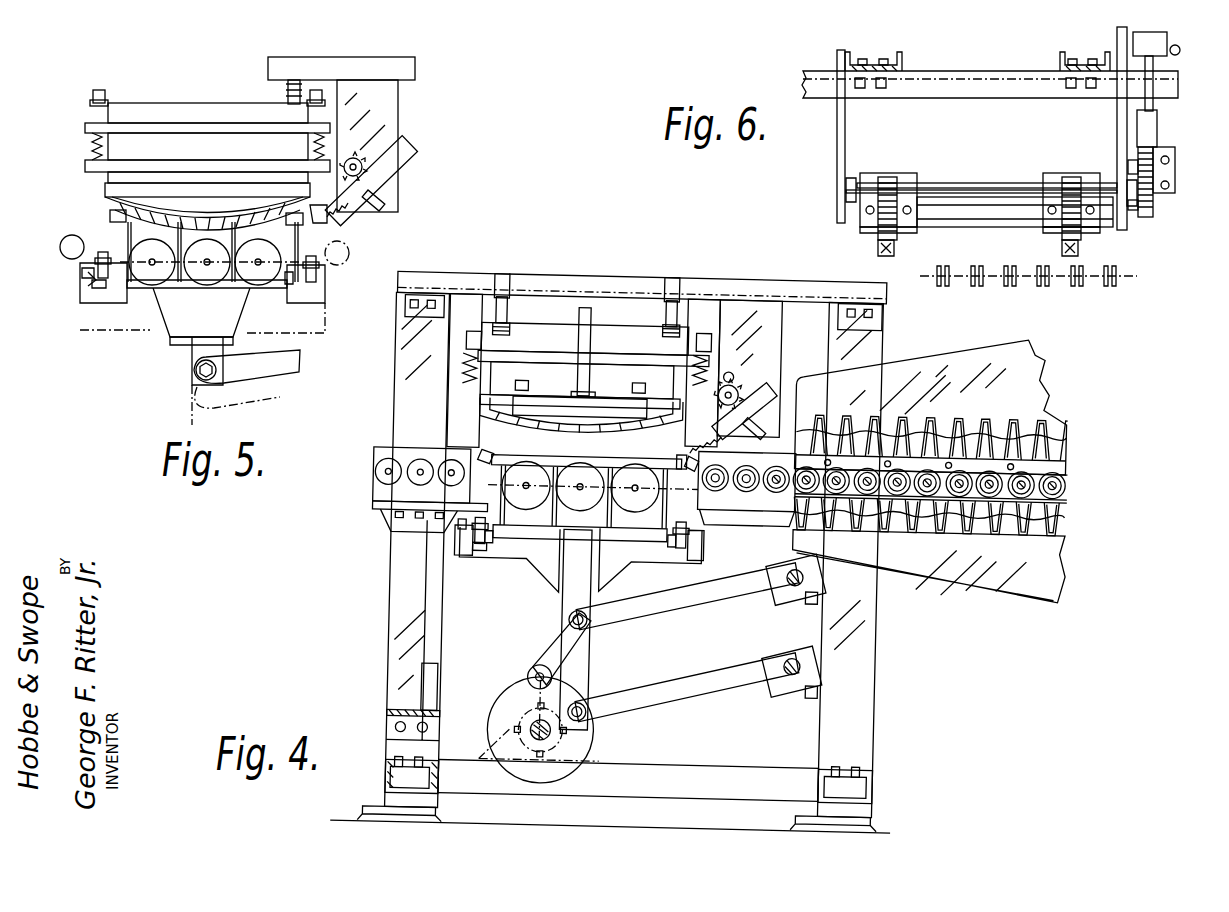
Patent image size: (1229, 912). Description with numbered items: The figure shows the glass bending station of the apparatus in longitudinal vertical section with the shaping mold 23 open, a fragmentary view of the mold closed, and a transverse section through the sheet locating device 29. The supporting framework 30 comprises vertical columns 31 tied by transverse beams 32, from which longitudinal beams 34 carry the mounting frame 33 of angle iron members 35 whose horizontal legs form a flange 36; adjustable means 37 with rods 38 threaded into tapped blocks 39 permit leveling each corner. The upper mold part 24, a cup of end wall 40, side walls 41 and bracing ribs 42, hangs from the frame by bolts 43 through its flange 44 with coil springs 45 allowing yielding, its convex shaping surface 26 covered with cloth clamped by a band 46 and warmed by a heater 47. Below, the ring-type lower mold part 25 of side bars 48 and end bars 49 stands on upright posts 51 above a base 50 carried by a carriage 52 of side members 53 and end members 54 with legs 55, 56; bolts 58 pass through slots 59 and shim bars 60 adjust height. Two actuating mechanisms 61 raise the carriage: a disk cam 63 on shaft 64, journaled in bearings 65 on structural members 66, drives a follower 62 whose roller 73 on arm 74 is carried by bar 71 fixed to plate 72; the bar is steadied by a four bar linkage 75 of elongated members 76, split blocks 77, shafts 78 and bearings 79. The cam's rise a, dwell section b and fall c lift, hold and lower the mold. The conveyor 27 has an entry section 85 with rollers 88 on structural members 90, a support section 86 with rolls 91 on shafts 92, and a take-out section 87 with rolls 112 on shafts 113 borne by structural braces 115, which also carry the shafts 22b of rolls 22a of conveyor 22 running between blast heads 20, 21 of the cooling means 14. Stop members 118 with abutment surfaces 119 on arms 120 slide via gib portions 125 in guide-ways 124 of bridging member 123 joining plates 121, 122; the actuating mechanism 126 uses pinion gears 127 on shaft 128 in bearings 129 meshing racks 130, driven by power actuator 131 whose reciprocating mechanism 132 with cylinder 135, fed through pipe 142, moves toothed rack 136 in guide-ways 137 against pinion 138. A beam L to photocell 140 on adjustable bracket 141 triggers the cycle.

In FIG. 4, the cooling means 14 is at (960, 347).
In FIG. 4, the blast head 20 is at (1035, 409).
In FIG. 4, the blast head 21 is at (990, 578).
In FIG. 4, the conveyor 22 is at (983, 462).
In FIG. 4, the rolls 22a is at (1042, 474).
In FIG. 4, the shafts 22b is at (1056, 489).
In FIG. 5, the shaping mold 23 is at (151, 171).
In FIG. 5, the upper mold part 24 is at (94, 194).
In FIG. 4, the upper mold part 24 is at (508, 405).
In FIG. 5, the lower mold part 25 is at (100, 217).
In FIG. 4, the lower mold part 25 is at (507, 467).
In FIG. 4, the shaping surfaces 26 is at (485, 462).
In FIG. 4, the conveyor 27 is at (567, 450).
In FIG. 5, the locating device 29 is at (391, 137).
In FIG. 4, the locating device 29 is at (666, 417).
In FIG. 6, the locating device 29 is at (977, 169).
In FIG. 4, the supporting framework 30 is at (484, 270).
In FIG. 4, the vertical columns 31 is at (390, 626).
In FIG. 4, the beams 32 is at (438, 291).
In FIG. 6, the beams 32 is at (950, 78).
In FIG. 5, the mounting frame 33 is at (198, 114).
In FIG. 4, the mounting frame 33 is at (602, 336).
In FIG. 5, the beams 34 is at (327, 70).
In FIG. 6, the beams 34 is at (902, 60).
In FIG. 5, the angle iron members 35 is at (225, 122).
In FIG. 4, the angle iron members 35 is at (635, 348).
In FIG. 5, the flange 36 is at (85, 127).
In FIG. 4, the flange 36 is at (470, 352).
In FIG. 4, the adjustable means 37 is at (510, 313).
In FIG. 5, the rods 38 is at (300, 103).
In FIG. 4, the rods 38 is at (508, 325).
In FIG. 4, the tapped blocks 39 is at (506, 300).
In FIG. 4, the end wall 40 is at (522, 440).
In FIG. 4, the side walls 41 is at (652, 380).
In FIG. 4, the bracing ribs 42 is at (546, 392).
In FIG. 5, the bolts 43 is at (93, 108).
In FIG. 4, the bolts 43 is at (728, 320).
In FIG. 5, the flange 44 is at (85, 166).
In FIG. 4, the flange 44 is at (480, 404).
In FIG. 5, the coil springs 45 is at (90, 150).
In FIG. 4, the coil springs 45 is at (460, 367).
In FIG. 4, the band 46 is at (487, 428).
In FIG. 4, the heater 47 is at (592, 395).
In FIG. 5, the side bars 48 is at (110, 216).
In FIG. 4, the side bars 48 is at (480, 470).
In FIG. 5, the end bars 49 is at (162, 222).
In FIG. 4, the end bars 49 is at (612, 478).
In FIG. 5, the base 50 is at (125, 300).
In FIG. 4, the base 50 is at (530, 540).
In FIG. 5, the upright posts 51 is at (160, 280).
In FIG. 4, the upright posts 51 is at (643, 530).
In FIG. 5, the carriage 52 is at (108, 336).
In FIG. 4, the carriage 52 is at (488, 586).
In FIG. 5, the side members 53 is at (83, 283).
In FIG. 4, the side members 53 is at (457, 543).
In FIG. 5, the end members 54 is at (100, 295).
In FIG. 4, the end members 54 is at (525, 572).
In FIG. 5, the leg 55 is at (92, 285).
In FIG. 4, the leg 55 is at (473, 550).
In FIG. 5, the leg 56 is at (82, 271).
In FIG. 4, the leg 56 is at (458, 528).
In FIG. 5, the bolts 58 is at (103, 254).
In FIG. 4, the bolts 58 is at (478, 556).
In FIG. 5, the slots 59 is at (86, 277).
In FIG. 5, the shim bars 60 is at (292, 290).
In FIG. 4, the shim bars 60 is at (486, 556).
In FIG. 4, the actuating mechanisms 61 is at (514, 639).
In FIG. 4, the follower 62 is at (513, 671).
In FIG. 4, the disk cam 63 is at (505, 712).
In FIG. 4, the shaft 64 is at (546, 733).
In FIG. 4, the bearings 65 is at (592, 768).
In FIG. 4, the structural members 66 is at (700, 782).
In FIG. 5, the bar 71 is at (198, 348).
In FIG. 4, the bar 71 is at (567, 637).
In FIG. 5, the plate 72 is at (170, 325).
In FIG. 4, the plate 72 is at (560, 594).
In FIG. 4, the roller 73 is at (528, 680).
In FIG. 4, the arm 74 is at (548, 667).
In FIG. 4, the four bar linkage 75 is at (625, 632).
In FIG. 5, the elongated members 76 is at (270, 365).
In FIG. 4, the elongated members 76 is at (688, 602).
In FIG. 4, the split blocks 77 is at (788, 585).
In FIG. 4, the shafts 78 is at (790, 598).
In FIG. 4, the bearings 79 is at (818, 600).
In FIG. 4, the entry section 85 is at (420, 450).
In FIG. 5, the support section 86 is at (260, 295).
In FIG. 4, the support section 86 is at (601, 452).
In FIG. 4, the take-out section 87 is at (778, 457).
In FIG. 5, the rollers 88 is at (60, 248).
In FIG. 4, the rollers 88 is at (408, 470).
In FIG. 4, the structural members 90 is at (380, 511).
In FIG. 5, the rolls 91 is at (242, 275).
In FIG. 4, the rolls 91 is at (618, 505).
In FIG. 5, the shafts 92 is at (207, 285).
In FIG. 4, the shafts 92 is at (582, 520).
In FIG. 5, the rolls 112 is at (340, 266).
In FIG. 4, the rolls 112 is at (715, 488).
In FIG. 6, the rolls 112 is at (1028, 288).
In FIG. 4, the shafts 113 is at (748, 488).
In FIG. 4, the structural braces 115 is at (712, 552).
In FIG. 5, the stop members 118 is at (330, 230).
In FIG. 6, the stop members 118 is at (894, 249).
In FIG. 5, the abutment surfaces 119 is at (311, 211).
In FIG. 4, the abutment surfaces 119 is at (678, 462).
In FIG. 6, the abutment surfaces 119 is at (882, 253).
In FIG. 5, the arms 120 is at (345, 216).
In FIG. 4, the arms 120 is at (716, 458).
In FIG. 6, the arms 120 is at (878, 246).
In FIG. 5, the plate 121 is at (378, 107).
In FIG. 4, the plate 121 is at (750, 310).
In FIG. 6, the plate 121 is at (845, 113).
In FIG. 6, the plate 122 is at (1117, 112).
In FIG. 5, the bridging member 123 is at (392, 196).
In FIG. 4, the bridging member 123 is at (772, 424).
In FIG. 6, the bridging member 123 is at (975, 212).
In FIG. 5, the guide-ways 124 is at (398, 178).
In FIG. 4, the guide-ways 124 is at (780, 402).
In FIG. 6, the guide-ways 124 is at (870, 174).
In FIG. 6, the gib portions 125 is at (862, 229).
In FIG. 4, the actuating mechanism 126 is at (748, 376).
In FIG. 6, the actuating mechanism 126 is at (940, 176).
In FIG. 5, the pinion gears 127 is at (362, 166).
In FIG. 4, the pinion gears 127 is at (745, 397).
In FIG. 6, the pinion gears 127 is at (898, 186).
In FIG. 4, the shaft 128 is at (752, 410).
In FIG. 6, the shaft 128 is at (985, 189).
In FIG. 6, the bearings 129 is at (846, 190).
In FIG. 5, the rack 130 is at (402, 154).
In FIG. 4, the rack 130 is at (775, 396).
In FIG. 6, the rack 130 is at (866, 208).
In FIG. 6, the power actuator 131 is at (1173, 146).
In FIG. 6, the reciprocating mechanism 132 is at (1164, 71).
In FIG. 6, the cylinder 135 is at (1167, 40).
In FIG. 6, the toothed rack 136 is at (1138, 180).
In FIG. 6, the guide-ways 137 is at (1130, 164).
In FIG. 6, the pinion 138 is at (1150, 212).
In FIG. 4, the photocell 140 is at (423, 686).
In FIG. 4, the adjustable bracket 141 is at (392, 713).
In FIG. 6, the pipe 142 is at (1180, 52).
In FIG. 4, the beam L is at (433, 616).
In FIG. 4, the rise a is at (487, 730).
In FIG. 4, the dwell section b is at (547, 786).
In FIG. 4, the fall c is at (588, 730).